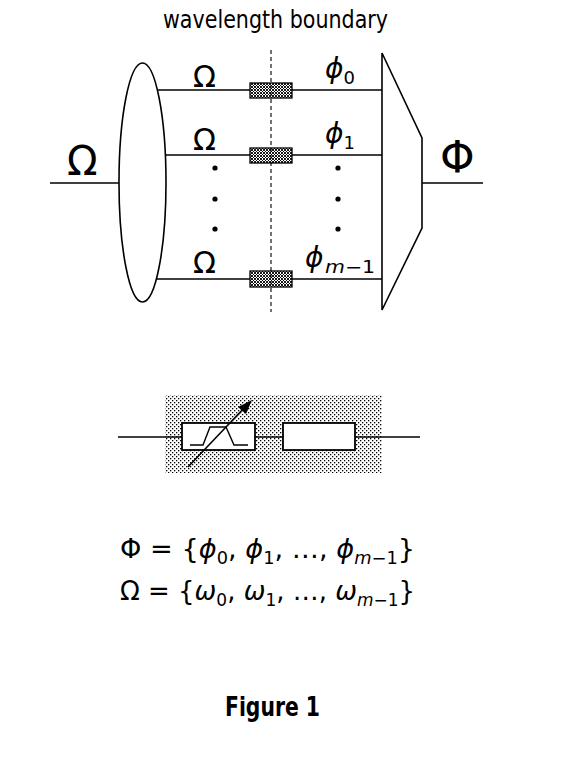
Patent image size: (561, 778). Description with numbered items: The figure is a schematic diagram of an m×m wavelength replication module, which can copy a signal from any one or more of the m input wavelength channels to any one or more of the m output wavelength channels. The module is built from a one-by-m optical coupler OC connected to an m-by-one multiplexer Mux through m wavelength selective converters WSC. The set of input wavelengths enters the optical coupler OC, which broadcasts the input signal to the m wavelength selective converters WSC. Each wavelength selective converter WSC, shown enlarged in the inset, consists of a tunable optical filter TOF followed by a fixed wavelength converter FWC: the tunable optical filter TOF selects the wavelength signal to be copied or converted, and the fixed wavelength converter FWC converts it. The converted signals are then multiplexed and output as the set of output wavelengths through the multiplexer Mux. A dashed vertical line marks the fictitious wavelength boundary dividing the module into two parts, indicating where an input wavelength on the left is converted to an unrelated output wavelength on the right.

The optical coupler OC is at (139, 217).
The wavelength selective converter WSC is at (378, 389).
The multiplexer Mux is at (398, 213).
The tunable optical filter TOF is at (218, 453).
The fixed wavelength converter FWC is at (319, 465).